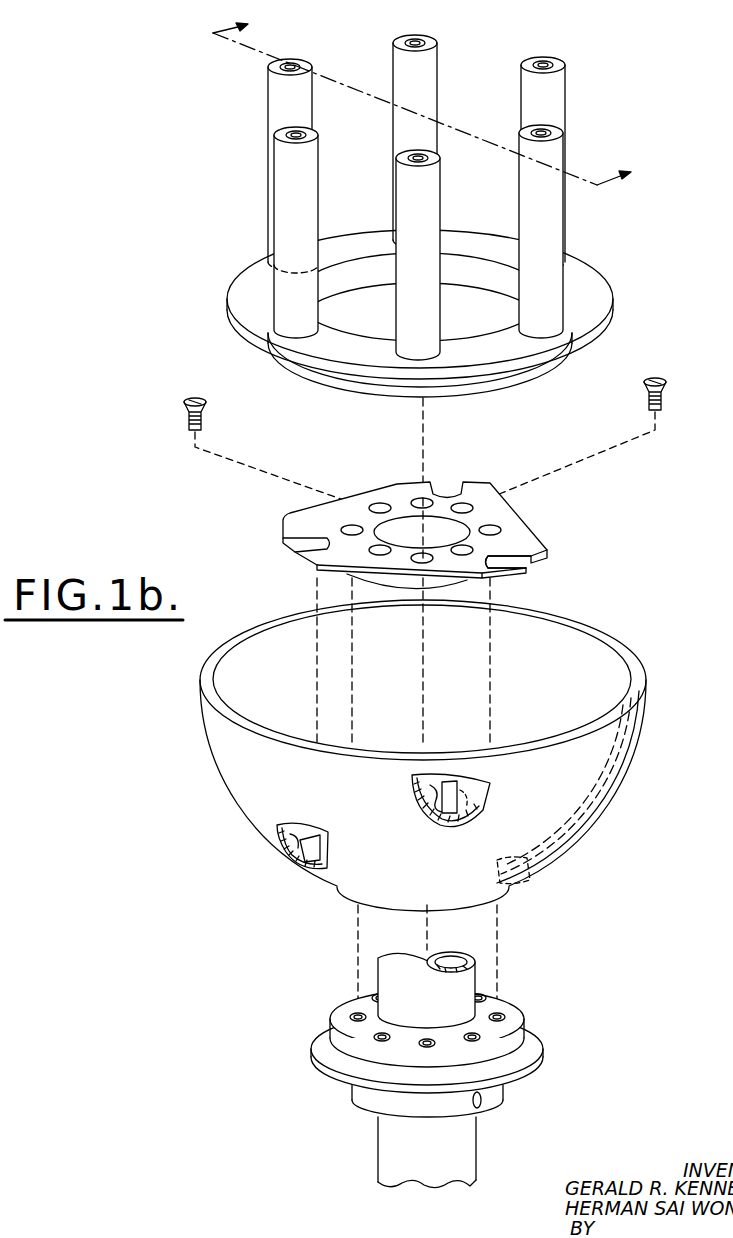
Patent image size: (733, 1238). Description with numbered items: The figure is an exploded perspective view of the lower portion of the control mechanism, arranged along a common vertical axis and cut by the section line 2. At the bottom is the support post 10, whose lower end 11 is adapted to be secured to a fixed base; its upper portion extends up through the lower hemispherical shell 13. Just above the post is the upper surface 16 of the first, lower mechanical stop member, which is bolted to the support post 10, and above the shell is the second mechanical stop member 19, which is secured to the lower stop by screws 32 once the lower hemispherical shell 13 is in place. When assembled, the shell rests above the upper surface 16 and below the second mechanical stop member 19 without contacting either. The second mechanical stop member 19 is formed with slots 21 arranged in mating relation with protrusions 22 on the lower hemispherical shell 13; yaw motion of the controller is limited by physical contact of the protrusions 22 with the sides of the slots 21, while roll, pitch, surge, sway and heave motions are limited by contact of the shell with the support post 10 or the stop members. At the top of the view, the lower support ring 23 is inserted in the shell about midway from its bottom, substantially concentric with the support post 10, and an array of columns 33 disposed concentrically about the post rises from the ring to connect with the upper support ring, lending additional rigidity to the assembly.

The section line 2- 2 is at (431, 97).
The support post 10 is at (396, 955).
The lower end 11 is at (387, 1138).
The lower hemispherical shell 13 is at (650, 695).
The upper surface 16 is at (515, 1010).
The second mechanical stop member 19 is at (393, 487).
The slots 21 is at (507, 563).
The protrusions 22 is at (413, 797).
The lower support ring 23 is at (243, 287).
The screws 32 is at (184, 404).
The columns 33 is at (400, 44).